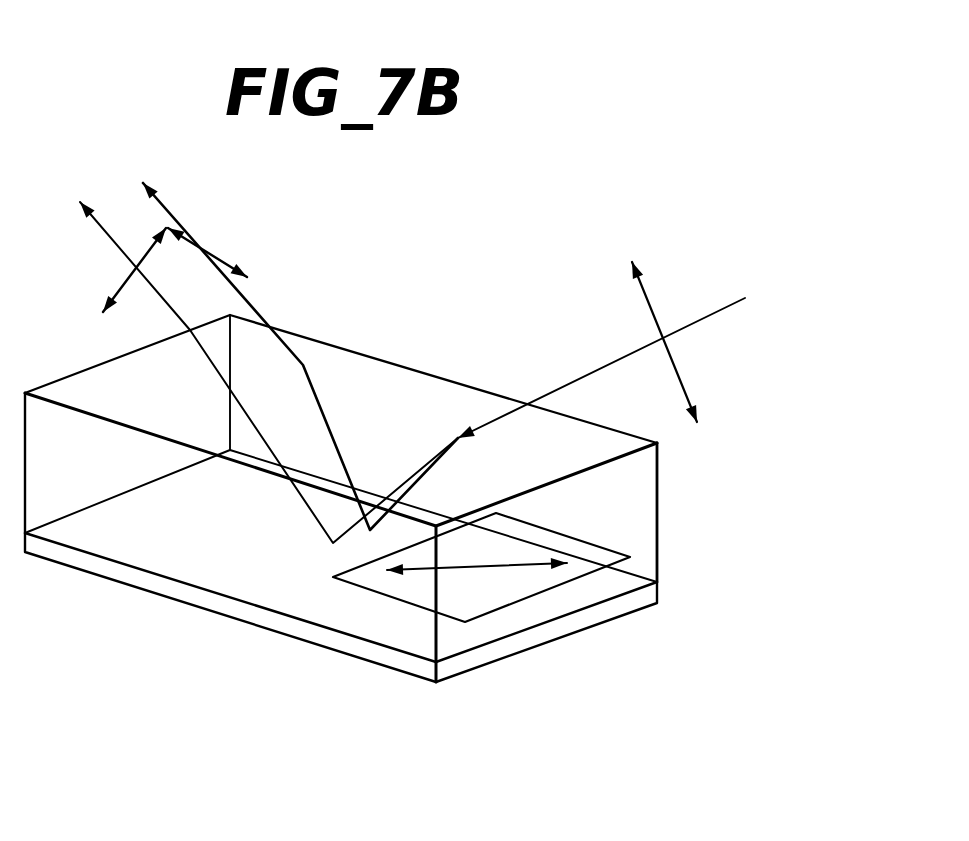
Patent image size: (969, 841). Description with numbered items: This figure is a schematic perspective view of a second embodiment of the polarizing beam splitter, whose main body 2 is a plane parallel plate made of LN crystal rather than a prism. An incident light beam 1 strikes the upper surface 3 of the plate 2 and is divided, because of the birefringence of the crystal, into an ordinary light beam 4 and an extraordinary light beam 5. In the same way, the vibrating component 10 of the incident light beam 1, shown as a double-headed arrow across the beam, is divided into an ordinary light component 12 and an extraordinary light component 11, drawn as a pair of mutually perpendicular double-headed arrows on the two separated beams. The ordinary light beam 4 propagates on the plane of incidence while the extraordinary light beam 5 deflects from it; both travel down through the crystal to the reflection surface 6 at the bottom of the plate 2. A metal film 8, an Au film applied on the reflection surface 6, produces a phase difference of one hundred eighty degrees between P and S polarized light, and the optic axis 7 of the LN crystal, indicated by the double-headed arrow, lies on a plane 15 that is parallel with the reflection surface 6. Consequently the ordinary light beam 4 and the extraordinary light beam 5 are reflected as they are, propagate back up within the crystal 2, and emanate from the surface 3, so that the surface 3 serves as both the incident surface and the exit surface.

The incident light beam 1 is at (712, 318).
The main body 2 is at (633, 502).
The surface 3 is at (382, 375).
The ordinary light beam 4 is at (106, 235).
The extraordinary light beam 5 is at (171, 211).
The reflection surface 6 is at (197, 560).
The optic axis 7 is at (517, 565).
The metal film 8 is at (302, 630).
The vibrating component 10 is at (678, 370).
The extraordinary light component 11 is at (224, 261).
The ordinary light component 12 is at (127, 280).
The plane 15 is at (483, 600).